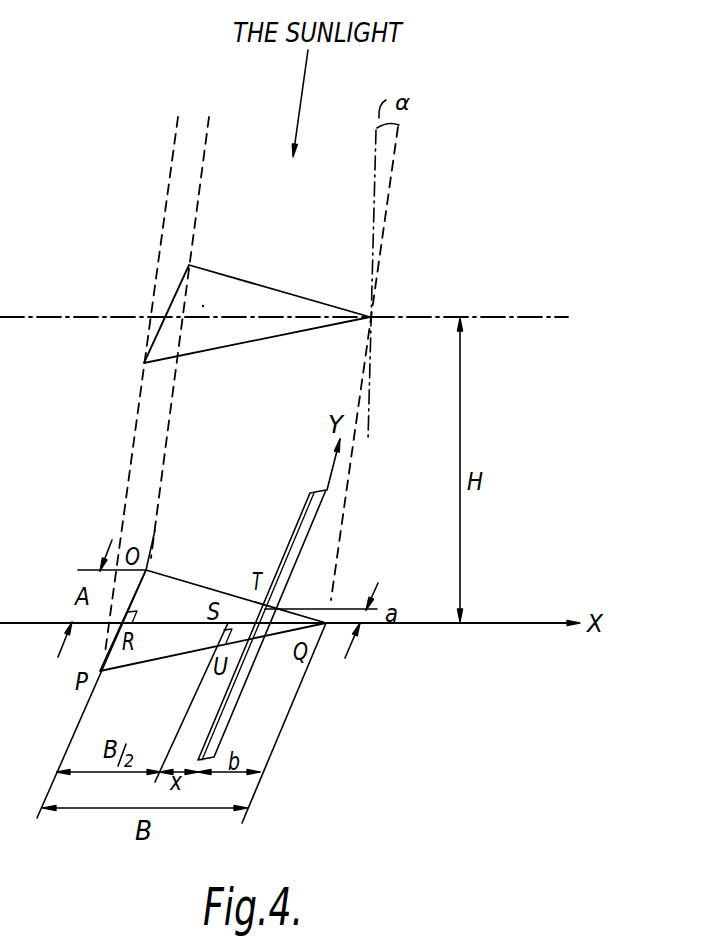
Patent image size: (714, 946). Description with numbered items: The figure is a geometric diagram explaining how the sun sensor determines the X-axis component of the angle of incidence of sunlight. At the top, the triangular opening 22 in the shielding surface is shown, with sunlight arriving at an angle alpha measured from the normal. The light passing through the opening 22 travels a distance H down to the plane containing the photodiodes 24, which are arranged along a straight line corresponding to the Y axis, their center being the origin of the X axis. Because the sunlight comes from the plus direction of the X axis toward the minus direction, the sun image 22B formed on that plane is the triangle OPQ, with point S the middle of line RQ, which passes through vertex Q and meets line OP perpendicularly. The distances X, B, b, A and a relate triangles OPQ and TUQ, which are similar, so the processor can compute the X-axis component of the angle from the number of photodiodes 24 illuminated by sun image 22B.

The opening 22 is at (252, 288).
The sun image 22B is at (183, 593).
The photodiodes 24 is at (313, 527).